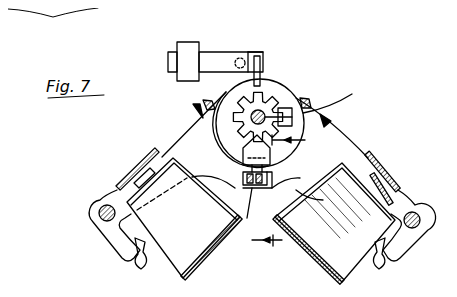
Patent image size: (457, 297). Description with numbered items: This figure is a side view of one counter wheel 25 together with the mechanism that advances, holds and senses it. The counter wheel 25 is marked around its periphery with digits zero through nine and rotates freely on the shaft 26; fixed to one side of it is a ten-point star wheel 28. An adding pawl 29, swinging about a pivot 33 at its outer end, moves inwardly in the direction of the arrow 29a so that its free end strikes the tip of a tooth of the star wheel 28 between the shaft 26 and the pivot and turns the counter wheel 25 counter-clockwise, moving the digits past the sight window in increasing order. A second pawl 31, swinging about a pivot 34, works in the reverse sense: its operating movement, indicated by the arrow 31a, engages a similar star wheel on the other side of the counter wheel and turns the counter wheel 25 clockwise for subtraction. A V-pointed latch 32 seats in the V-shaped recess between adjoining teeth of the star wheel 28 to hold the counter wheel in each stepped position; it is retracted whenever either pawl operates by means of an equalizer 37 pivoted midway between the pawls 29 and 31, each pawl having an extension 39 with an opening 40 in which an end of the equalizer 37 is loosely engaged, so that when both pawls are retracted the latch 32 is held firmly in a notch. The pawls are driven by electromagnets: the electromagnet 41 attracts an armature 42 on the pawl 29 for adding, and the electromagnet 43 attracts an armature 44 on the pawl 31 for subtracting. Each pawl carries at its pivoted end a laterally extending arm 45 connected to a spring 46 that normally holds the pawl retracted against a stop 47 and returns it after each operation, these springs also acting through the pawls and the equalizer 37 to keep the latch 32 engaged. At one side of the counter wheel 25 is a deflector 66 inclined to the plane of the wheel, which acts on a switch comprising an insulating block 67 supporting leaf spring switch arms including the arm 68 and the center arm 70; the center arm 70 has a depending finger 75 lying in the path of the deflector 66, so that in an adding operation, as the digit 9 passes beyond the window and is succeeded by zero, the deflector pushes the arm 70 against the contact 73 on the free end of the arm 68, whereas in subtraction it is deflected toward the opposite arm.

The insulating block 67 is at (196, 24).
The leaf spring switch arm 68 is at (220, 58).
The contact 73 is at (243, 60).
The center switch arm 70 is at (262, 58).
The depending finger 75 is at (262, 77).
The counter wheel 25 is at (222, 90).
The star wheel 28 is at (266, 106).
The shaft 26 is at (297, 116).
The section line 9 is at (287, 203).
The V-pointed latch 32 is at (288, 177).
The opening 40 is at (258, 186).
The equalizer 37 is at (250, 216).
The pawl 29 is at (194, 126).
The arrow 29a is at (198, 116).
The stop 47 is at (333, 82).
The pawl 31 is at (308, 122).
The deflector 66 is at (337, 97).
The arrow 31a is at (338, 127).
The electromagnet 41 is at (188, 243).
The armature 42 is at (125, 179).
The extension 39 is at (226, 182).
The laterally extending arm 45 is at (112, 243).
The pivot 33 is at (98, 212).
The spring 46 is at (146, 241).
The electromagnet 43 is at (351, 240).
The armature 44 is at (421, 161).
The pivot 34 is at (414, 212).